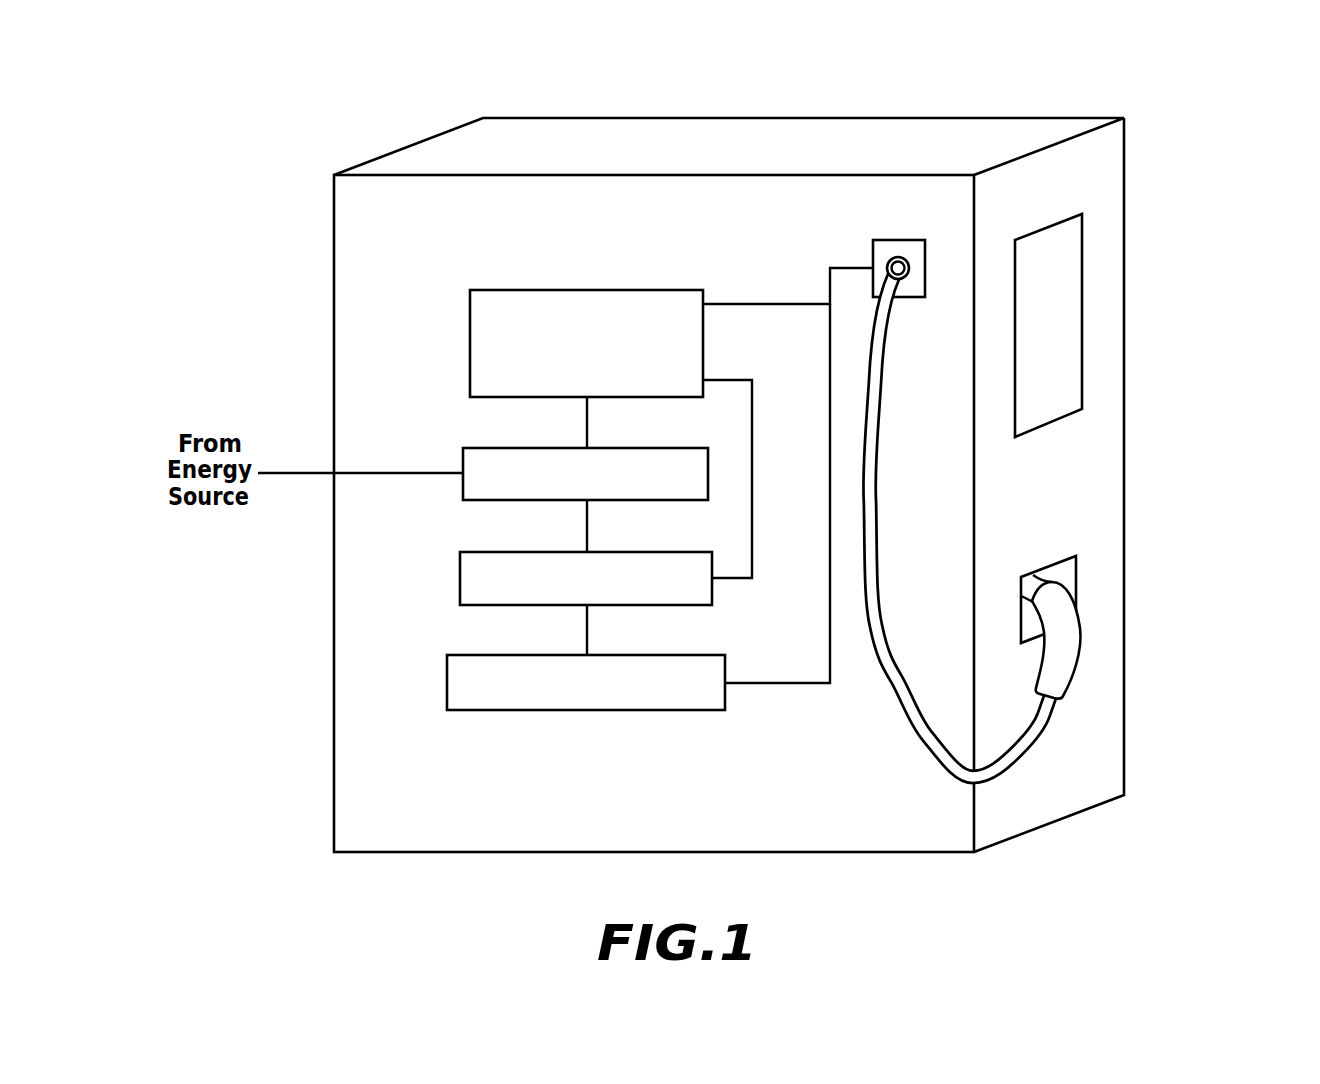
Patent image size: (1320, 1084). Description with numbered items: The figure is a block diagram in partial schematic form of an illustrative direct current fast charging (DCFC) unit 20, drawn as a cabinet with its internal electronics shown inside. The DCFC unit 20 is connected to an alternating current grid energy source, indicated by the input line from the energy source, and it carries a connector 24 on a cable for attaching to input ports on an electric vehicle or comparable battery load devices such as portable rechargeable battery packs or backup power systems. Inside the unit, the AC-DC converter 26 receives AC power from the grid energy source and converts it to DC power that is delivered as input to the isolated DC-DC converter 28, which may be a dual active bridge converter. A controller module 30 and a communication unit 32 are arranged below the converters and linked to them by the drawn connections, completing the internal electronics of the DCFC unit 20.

The direct current fast charging (DCFC) unit 20 is at (1172, 82).
The connector 24 is at (1073, 633).
The AC-DC converter 26 is at (463, 460).
The DC-DC converter 28 is at (470, 313).
The controller module 30 is at (460, 575).
The communication unit 32 is at (447, 678).